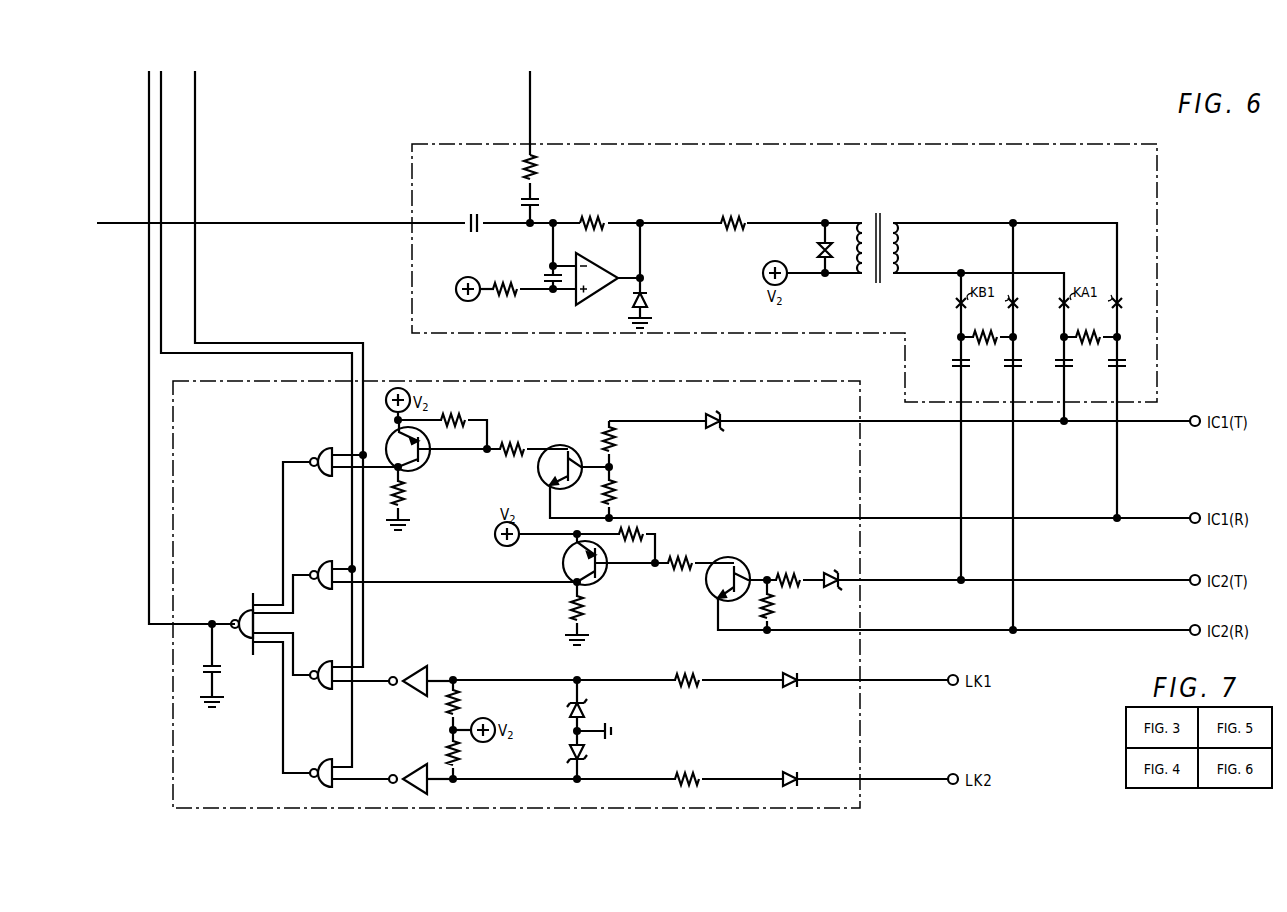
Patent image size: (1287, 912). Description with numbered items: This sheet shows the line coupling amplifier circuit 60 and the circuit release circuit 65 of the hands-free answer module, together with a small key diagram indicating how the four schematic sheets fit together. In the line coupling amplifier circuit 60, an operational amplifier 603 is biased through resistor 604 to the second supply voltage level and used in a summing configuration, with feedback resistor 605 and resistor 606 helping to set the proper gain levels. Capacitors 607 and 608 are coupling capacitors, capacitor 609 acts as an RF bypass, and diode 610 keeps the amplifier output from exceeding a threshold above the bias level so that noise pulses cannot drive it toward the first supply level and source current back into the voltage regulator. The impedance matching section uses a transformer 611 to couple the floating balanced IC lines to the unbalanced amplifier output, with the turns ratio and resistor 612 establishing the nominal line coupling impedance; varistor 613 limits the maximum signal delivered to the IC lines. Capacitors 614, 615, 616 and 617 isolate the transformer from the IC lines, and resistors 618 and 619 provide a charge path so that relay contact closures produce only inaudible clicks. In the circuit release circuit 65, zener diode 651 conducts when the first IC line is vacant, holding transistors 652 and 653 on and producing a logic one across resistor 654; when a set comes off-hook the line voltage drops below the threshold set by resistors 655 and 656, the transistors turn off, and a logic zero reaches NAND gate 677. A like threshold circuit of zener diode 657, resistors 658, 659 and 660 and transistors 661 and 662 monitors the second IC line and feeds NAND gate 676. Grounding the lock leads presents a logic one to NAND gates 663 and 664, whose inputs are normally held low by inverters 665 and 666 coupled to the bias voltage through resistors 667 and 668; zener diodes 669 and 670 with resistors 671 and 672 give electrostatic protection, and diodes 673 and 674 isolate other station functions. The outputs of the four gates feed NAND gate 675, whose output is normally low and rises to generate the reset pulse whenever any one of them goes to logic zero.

The line coupling amplifier circuit 60 is at (953, 170).
The circuit release circuit 65 is at (716, 402).
The operational amplifier 603 is at (590, 266).
The resistor 604 is at (487, 299).
The feedback resistor 605 is at (593, 211).
The resistor 606 is at (545, 167).
The coupling capacitor 607 is at (544, 202).
The coupling capacitor 608 is at (473, 213).
The capacitor 609 is at (540, 279).
The diode 610 is at (652, 275).
The transformer 611 is at (877, 238).
The resistor 612 is at (734, 211).
The varistor 613 is at (821, 250).
The capacitor 614 is at (949, 374).
The capacitor 615 is at (1002, 374).
The capacitor 616 is at (1053, 374).
The capacitor 617 is at (1106, 374).
The resistor 618 is at (987, 326).
The resistor 619 is at (1090, 326).
The zener diode 651 is at (704, 427).
The transistor 652 is at (422, 464).
The transistor 653 is at (575, 440).
The resistor 654 is at (411, 498).
The resistor 655 is at (624, 444).
The resistor 656 is at (624, 492).
The zener diode 657 is at (832, 572).
The resistor 658 is at (589, 613).
The resistor 659 is at (788, 571).
The resistor 660 is at (782, 605).
The transistor 661 is at (597, 560).
The transistor 662 is at (728, 562).
The NAND gate 663 is at (324, 667).
The NAND gate 664 is at (324, 765).
The inverter 665 is at (414, 673).
The inverter 666 is at (414, 771).
The resistor 667 is at (468, 705).
The resistor 668 is at (468, 754).
The zener diode 669 is at (591, 755).
The zener diode 670 is at (591, 705).
The resistor 671 is at (688, 668).
The resistor 672 is at (688, 768).
The diode 673 is at (791, 669).
The diode 674 is at (791, 768).
The NAND gate 675 is at (246, 621).
The NAND gate 676 is at (324, 567).
The NAND gate 677 is at (324, 454).